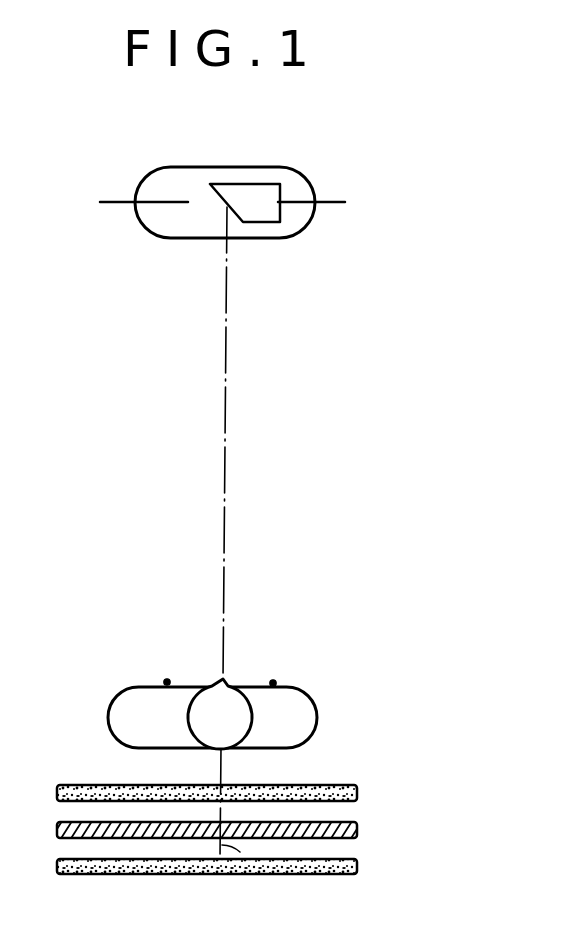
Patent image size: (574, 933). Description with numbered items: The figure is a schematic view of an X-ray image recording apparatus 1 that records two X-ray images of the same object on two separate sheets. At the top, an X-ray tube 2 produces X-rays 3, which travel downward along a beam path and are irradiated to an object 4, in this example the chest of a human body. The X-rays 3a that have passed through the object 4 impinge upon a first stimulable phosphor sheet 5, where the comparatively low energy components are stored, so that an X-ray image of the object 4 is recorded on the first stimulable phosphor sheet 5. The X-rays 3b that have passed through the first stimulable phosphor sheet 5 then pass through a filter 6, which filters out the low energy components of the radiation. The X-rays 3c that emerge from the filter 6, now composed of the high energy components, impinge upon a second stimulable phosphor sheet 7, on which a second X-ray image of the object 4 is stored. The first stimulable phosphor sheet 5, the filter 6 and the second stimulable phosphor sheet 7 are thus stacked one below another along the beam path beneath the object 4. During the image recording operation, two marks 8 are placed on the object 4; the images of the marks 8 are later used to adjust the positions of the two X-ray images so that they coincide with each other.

The X-ray image recording apparatus 1 is at (425, 258).
The X-ray tube 2 is at (288, 167).
The X-rays 3 is at (228, 333).
The X-rays which have passed through the object 3a is at (220, 775).
The X-rays which have passed through the first stimulable phosphor sheet 3b is at (222, 808).
The X-rays which have passed through the filter 3c is at (243, 858).
The object 4 is at (297, 708).
The first stimulable phosphor sheet 5 is at (356, 783).
The filter 6 is at (357, 827).
The second stimulable phosphor sheet 7 is at (357, 863).
The marks 8 is at (164, 677).